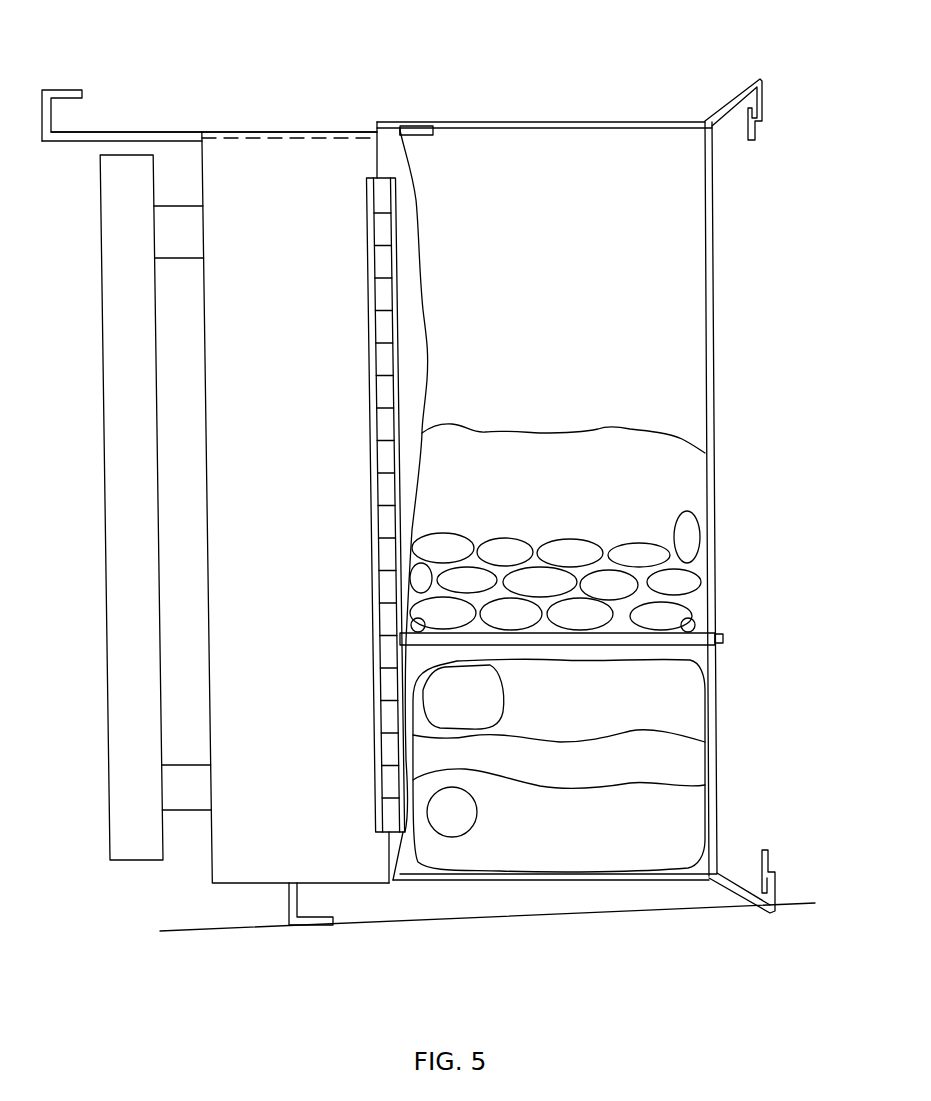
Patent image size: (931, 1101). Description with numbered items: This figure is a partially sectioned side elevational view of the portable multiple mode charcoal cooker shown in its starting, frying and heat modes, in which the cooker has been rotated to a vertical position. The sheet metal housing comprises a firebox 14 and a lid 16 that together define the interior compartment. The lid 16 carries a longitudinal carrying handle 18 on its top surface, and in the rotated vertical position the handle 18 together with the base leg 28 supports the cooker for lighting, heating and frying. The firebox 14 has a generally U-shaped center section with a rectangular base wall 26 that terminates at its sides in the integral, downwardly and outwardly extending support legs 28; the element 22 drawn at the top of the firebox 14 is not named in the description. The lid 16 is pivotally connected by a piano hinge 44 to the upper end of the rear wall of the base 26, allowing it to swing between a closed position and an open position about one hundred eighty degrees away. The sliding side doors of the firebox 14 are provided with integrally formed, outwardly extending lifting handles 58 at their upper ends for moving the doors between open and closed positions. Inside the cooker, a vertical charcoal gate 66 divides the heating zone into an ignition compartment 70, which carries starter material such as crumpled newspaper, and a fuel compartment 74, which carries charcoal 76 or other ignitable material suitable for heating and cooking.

The firebox 14 is at (712, 364).
The lid 16 is at (218, 610).
The carrying handle 18 is at (122, 541).
The top flange 22 is at (128, 132).
The base wall 26 is at (713, 425).
The support legs 28 is at (748, 895).
The piano hinge 44 is at (378, 364).
The lifting handles 58 is at (61, 90).
The charcoal gate 66 is at (611, 658).
The ignition compartment 70 is at (559, 765).
The fuel compartment 74 is at (563, 398).
The charcoal 76 is at (651, 556).